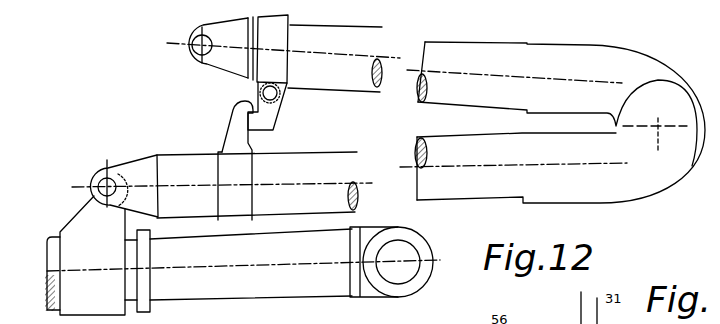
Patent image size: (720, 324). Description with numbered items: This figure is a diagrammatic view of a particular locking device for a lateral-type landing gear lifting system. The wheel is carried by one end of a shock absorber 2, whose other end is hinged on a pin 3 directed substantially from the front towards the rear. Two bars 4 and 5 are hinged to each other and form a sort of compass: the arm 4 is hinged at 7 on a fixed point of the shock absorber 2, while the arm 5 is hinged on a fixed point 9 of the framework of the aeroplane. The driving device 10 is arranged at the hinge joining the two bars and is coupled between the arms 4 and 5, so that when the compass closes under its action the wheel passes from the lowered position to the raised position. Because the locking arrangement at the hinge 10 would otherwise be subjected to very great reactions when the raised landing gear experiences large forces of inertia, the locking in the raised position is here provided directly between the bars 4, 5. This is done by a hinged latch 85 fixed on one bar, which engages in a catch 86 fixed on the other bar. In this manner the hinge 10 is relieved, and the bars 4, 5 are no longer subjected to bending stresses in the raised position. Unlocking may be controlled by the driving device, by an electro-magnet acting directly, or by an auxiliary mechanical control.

The shock absorber 2 is at (197, 281).
The pin 3 is at (403, 269).
The bar 4 is at (328, 158).
The bar 5 is at (339, 38).
The hinge point 7 is at (107, 186).
The fixed point of the framework 9 is at (203, 45).
The driving device 10 is at (658, 110).
The hinged latch 85 is at (268, 112).
The catch 86 is at (237, 130).